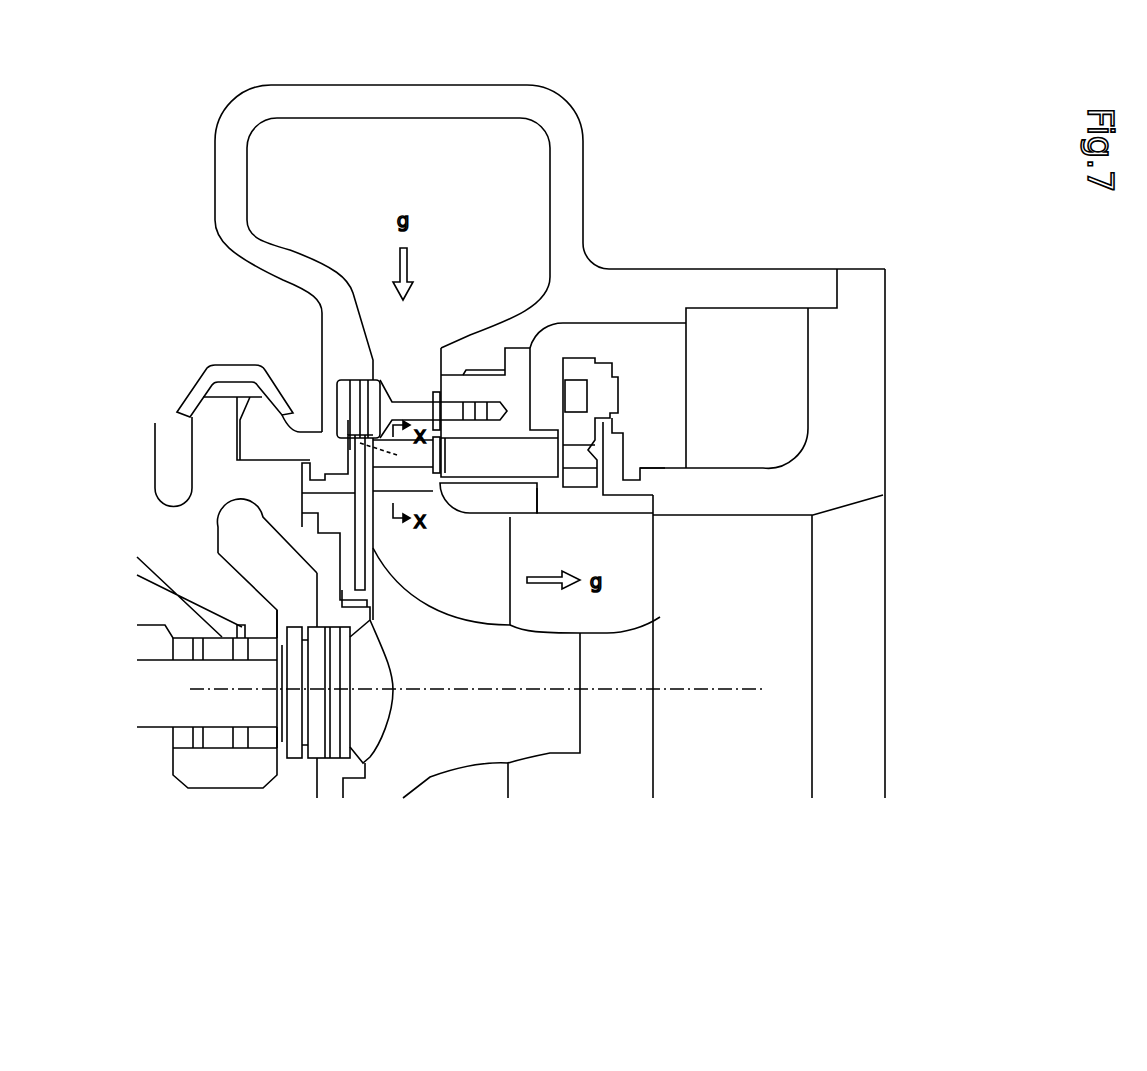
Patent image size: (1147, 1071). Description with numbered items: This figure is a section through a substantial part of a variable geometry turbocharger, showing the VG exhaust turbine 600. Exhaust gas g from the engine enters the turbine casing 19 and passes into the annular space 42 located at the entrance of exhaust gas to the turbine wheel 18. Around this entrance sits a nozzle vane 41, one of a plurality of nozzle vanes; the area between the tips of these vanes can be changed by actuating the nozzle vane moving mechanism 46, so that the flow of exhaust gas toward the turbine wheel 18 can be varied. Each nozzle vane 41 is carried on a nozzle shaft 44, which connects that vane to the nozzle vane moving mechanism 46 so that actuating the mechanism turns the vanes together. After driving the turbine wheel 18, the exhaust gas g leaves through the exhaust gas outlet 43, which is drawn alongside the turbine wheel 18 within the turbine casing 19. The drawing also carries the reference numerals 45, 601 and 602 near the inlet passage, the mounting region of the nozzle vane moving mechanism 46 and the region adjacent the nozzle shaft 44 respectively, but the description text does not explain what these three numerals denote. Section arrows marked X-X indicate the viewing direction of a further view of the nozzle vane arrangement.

The turbine wheel 18 is at (547, 665).
The turbine casing 19 is at (557, 115).
The nozzle vane 41 is at (238, 404).
The annular space 42 is at (397, 480).
The exhaust gas outlet 43 is at (547, 553).
The nozzle shaft 44 is at (505, 457).
The inlet passage 45 is at (430, 353).
The nozzle vane moving mechanism 46 is at (630, 394).
The VG exhaust turbine 600 is at (929, 243).
The seal plate 601 is at (540, 513).
The recess 602 is at (427, 498).